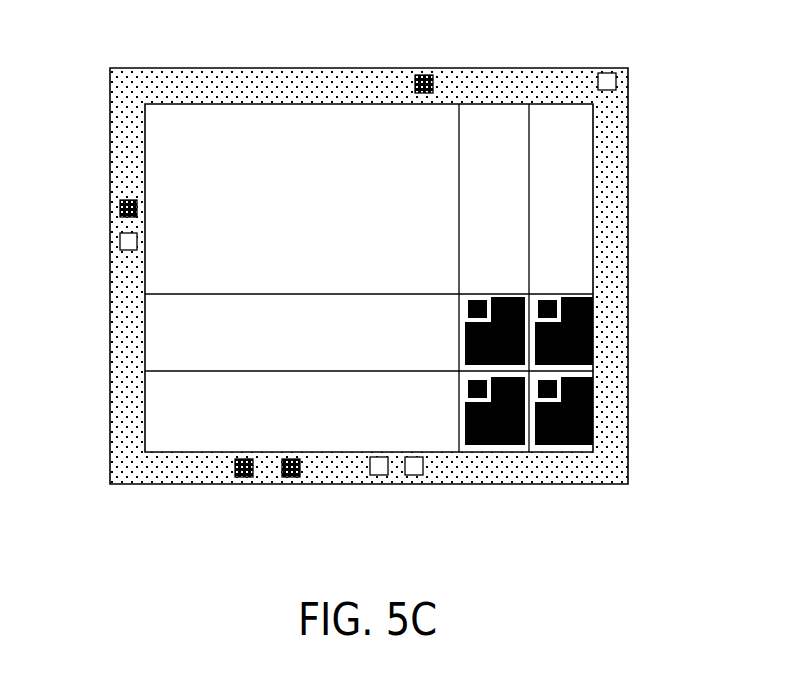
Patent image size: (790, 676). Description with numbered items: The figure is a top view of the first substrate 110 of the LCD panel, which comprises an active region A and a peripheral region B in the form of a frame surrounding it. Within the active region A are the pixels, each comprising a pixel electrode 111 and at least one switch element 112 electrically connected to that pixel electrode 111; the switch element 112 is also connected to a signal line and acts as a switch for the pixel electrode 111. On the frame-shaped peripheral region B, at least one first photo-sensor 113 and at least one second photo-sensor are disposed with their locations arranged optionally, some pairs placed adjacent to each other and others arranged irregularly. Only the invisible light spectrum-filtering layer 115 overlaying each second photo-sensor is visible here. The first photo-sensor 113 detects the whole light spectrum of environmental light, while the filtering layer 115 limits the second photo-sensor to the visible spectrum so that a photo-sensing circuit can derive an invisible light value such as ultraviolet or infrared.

The first substrate 110 is at (627, 143).
The pixel electrode 111 is at (588, 418).
The switch element 112 is at (548, 298).
The first photo-sensor 113 is at (421, 75).
The invisible light spectrum-filtering layer 115 is at (611, 74).